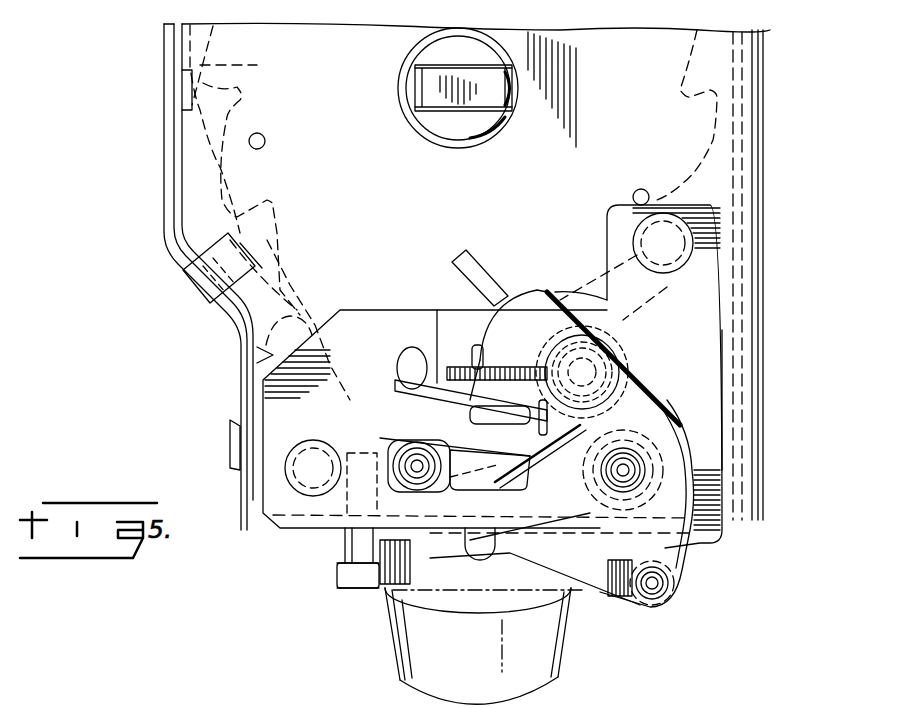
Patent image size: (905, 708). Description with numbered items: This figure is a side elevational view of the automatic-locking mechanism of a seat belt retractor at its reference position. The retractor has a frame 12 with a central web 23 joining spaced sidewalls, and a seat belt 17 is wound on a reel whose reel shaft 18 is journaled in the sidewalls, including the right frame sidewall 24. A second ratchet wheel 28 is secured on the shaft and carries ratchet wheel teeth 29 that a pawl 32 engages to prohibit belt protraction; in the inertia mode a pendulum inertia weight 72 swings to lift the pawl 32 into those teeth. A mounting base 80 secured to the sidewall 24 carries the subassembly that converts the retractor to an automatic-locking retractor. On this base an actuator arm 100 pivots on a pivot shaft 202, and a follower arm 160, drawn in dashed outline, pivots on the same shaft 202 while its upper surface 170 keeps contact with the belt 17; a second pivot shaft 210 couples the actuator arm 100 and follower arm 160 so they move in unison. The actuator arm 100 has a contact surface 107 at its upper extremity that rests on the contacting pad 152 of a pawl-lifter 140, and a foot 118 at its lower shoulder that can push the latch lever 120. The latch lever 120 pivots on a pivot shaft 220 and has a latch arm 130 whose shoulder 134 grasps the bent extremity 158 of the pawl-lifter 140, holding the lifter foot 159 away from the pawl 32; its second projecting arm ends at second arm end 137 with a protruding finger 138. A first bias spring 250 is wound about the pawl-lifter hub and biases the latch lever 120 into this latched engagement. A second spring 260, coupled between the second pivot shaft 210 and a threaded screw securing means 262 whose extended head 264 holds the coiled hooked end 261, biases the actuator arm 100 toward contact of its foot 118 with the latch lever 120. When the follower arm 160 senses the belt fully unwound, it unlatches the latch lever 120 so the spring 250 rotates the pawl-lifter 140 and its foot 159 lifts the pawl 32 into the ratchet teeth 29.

The frame 12 is at (765, 158).
The seat belt 17 is at (185, 194).
The reel shaft 18 is at (488, 91).
The central web 23 is at (763, 116).
The frame sidewall 24 is at (740, 211).
The second ratchet wheel 28 is at (165, 73).
The ratchet wheel teeth 29 is at (165, 117).
The pawl 32 is at (648, 362).
The inertia weight 72 is at (400, 675).
The mounting base 80 is at (723, 322).
The actuator arm 100 is at (703, 441).
The contact surface 107 is at (560, 290).
The foot 118 is at (507, 557).
The latch lever 120 is at (386, 440).
The latch arm 130 is at (440, 415).
The shoulder 134 is at (400, 378).
The second arm end 137 is at (540, 492).
The finger 138 is at (548, 470).
The pawl-lifter 140 is at (494, 283).
The contacting pad 152 is at (545, 289).
The extremity 158 is at (437, 310).
The foot 159 is at (517, 426).
The follower arm 160 is at (255, 368).
The upper surface 170 is at (300, 292).
The pivot shaft 202 is at (635, 472).
The second pivot shaft 210 is at (660, 592).
The pivot shaft 220 is at (417, 470).
The first bias spring 250 is at (638, 333).
The second spring 260 is at (382, 604).
The hooked end 261 is at (345, 572).
The securing means 262 is at (345, 548).
The extended head 264 is at (340, 590).